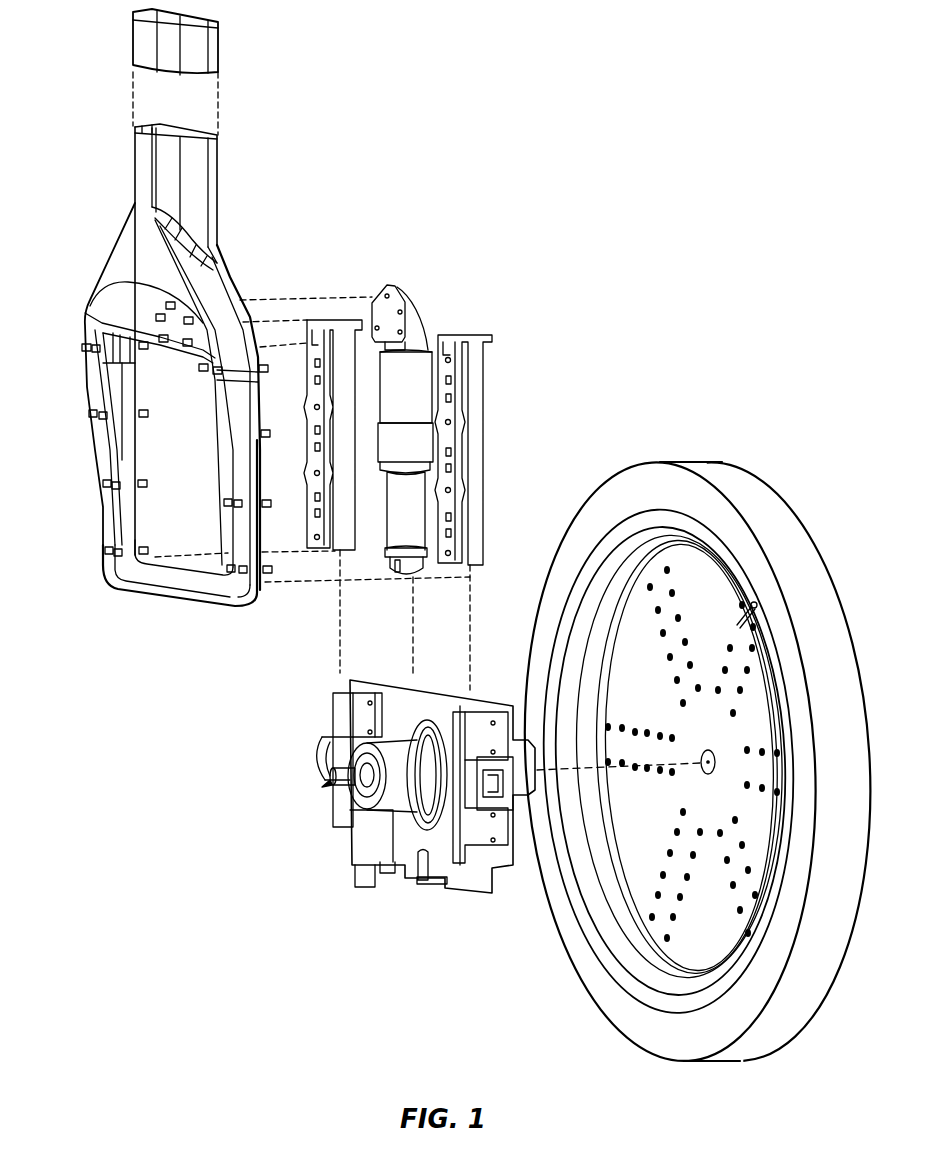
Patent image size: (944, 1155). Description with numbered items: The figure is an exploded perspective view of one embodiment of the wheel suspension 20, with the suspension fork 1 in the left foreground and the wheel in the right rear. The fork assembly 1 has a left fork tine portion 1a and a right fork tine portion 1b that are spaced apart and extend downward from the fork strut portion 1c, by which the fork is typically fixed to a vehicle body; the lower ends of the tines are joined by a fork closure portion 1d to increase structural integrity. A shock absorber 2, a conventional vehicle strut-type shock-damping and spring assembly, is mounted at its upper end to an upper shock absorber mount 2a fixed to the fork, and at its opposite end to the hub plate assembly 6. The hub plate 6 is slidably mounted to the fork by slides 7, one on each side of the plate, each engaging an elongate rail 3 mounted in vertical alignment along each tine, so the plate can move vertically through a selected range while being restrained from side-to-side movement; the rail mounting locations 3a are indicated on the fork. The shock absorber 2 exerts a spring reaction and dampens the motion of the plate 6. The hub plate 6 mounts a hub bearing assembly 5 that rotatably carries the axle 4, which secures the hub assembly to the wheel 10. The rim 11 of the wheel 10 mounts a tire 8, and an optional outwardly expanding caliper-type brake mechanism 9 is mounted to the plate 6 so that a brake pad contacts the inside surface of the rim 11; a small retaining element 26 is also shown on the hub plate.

The suspension fork 1 is at (220, 213).
The left fork tine portion 1a is at (103, 517).
The right fork tine portion 1b is at (227, 518).
The fork strut portion 1c is at (213, 57).
The fork closure portion 1d is at (190, 600).
The shock absorber 2 is at (422, 323).
The upper shock absorber mount 2a is at (225, 272).
The elongate rail 3 is at (345, 318).
The bracket mounting holes 3a is at (240, 310).
The axle 4 is at (343, 773).
The hub bearing assembly 5 is at (408, 787).
The hub plate assembly 6 is at (405, 685).
The slide 7 is at (362, 710).
The tire 8 is at (690, 462).
The brake mechanism 9 is at (320, 740).
The wheel 10 is at (640, 680).
The rim 11 is at (623, 552).
The wheel suspension 20 is at (488, 160).
The retaining clip 26 is at (437, 873).